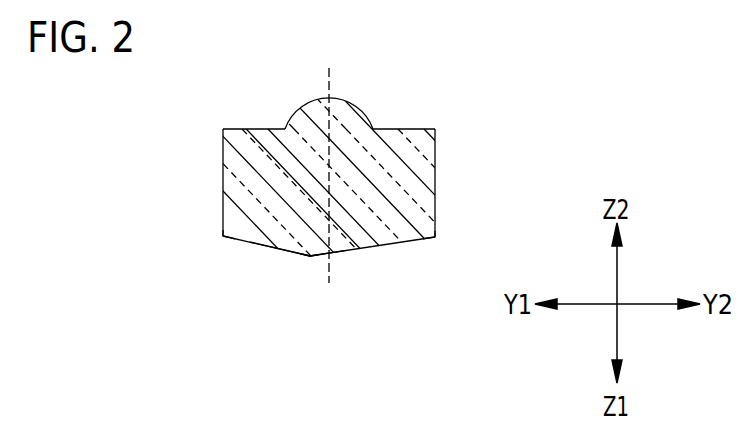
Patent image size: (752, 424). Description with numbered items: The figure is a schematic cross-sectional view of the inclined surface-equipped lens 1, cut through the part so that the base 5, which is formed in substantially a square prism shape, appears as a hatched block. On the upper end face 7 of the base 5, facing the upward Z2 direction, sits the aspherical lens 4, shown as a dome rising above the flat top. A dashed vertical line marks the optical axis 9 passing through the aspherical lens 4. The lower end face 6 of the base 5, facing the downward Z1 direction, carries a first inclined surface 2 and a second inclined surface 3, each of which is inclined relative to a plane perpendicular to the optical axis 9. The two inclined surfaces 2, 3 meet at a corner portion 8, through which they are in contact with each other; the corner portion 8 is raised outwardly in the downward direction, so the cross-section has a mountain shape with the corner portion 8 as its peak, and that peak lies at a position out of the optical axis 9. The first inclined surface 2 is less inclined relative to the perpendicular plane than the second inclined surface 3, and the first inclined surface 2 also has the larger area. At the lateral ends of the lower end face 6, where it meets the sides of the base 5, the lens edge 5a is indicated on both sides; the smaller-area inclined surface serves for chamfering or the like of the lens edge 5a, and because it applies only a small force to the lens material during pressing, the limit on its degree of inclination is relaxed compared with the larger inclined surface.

The inclined surface-equipped lens 1 is at (358, 189).
The first inclined surface 2 is at (390, 243).
The second inclined surface 3 is at (240, 241).
The aspherical lens 4 is at (355, 116).
The base 5 is at (435, 143).
The lens edge 5a is at (223, 236).
The lower end face 6 is at (268, 247).
The upper end face 7 is at (427, 130).
The corner portion 8 is at (308, 257).
The optical axis 9 is at (330, 80).